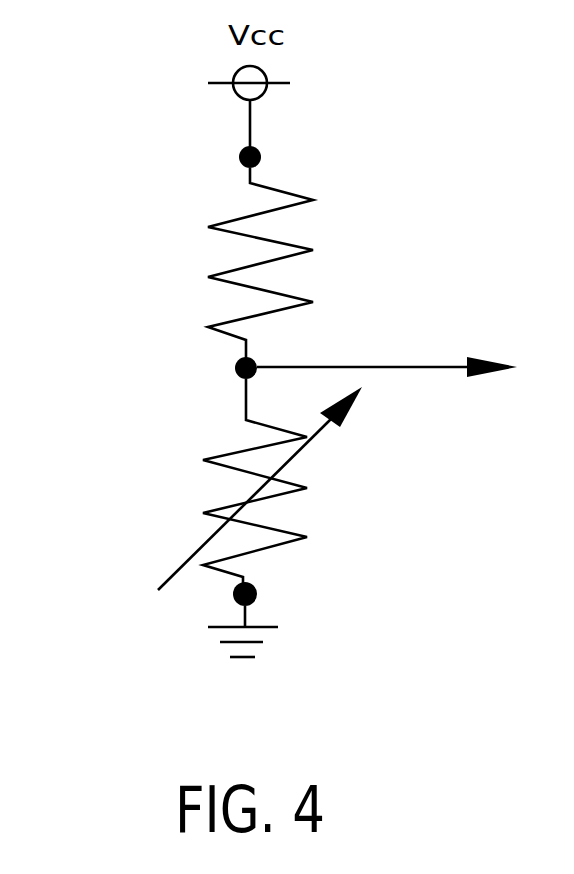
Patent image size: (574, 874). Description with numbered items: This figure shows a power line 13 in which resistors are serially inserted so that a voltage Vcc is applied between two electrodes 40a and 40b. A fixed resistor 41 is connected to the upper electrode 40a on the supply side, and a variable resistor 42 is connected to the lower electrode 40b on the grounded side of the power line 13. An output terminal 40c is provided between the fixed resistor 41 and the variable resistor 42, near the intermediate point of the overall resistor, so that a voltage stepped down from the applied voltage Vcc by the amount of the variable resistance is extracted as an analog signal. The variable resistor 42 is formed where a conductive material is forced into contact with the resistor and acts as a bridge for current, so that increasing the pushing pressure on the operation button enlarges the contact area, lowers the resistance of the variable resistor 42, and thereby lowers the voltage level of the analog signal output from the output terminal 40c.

The power line 13 is at (248, 125).
The electrode 40a is at (240, 160).
The electrode 40b is at (233, 597).
The output terminal 40c is at (235, 372).
The fixed resistor 41 is at (313, 250).
The variable resistor 42 is at (307, 488).